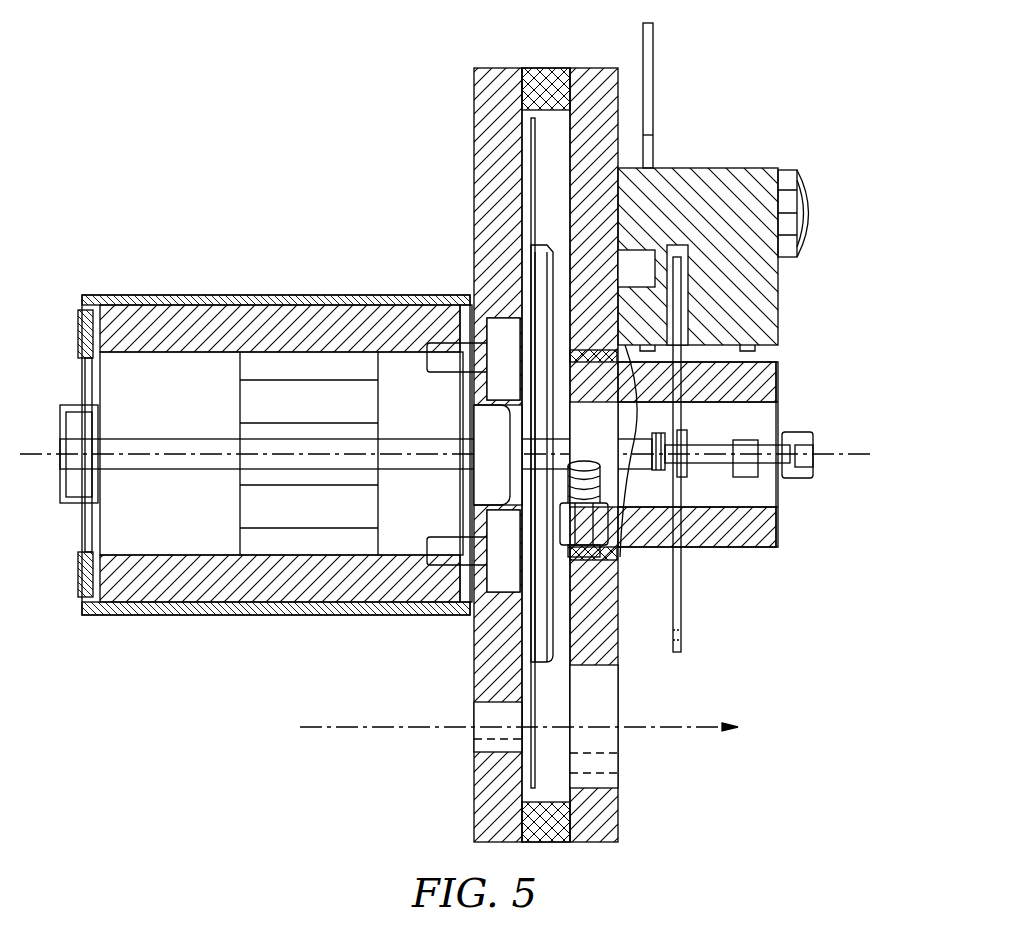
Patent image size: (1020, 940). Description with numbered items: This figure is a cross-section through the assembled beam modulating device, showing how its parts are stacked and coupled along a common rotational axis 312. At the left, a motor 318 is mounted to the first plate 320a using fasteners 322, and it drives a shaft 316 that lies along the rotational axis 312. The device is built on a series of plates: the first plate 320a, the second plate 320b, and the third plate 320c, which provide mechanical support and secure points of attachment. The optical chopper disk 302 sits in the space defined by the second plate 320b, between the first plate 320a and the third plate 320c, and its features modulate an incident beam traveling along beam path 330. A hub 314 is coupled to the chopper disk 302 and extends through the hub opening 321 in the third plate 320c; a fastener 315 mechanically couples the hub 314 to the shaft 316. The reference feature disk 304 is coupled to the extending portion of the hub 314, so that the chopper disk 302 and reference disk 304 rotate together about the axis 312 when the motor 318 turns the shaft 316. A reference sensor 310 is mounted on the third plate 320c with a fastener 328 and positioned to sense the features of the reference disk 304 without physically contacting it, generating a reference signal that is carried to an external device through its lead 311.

The optical chopper wheel or disk 302 is at (531, 192).
The reference feature disk 304 is at (681, 590).
The reference sensor 310 is at (780, 318).
The lead 311 is at (655, 70).
The rotational axis 312 is at (840, 460).
The hub 314 is at (780, 510).
The fastener 315 is at (560, 482).
The shaft 316 is at (192, 437).
The motor 318 is at (278, 295).
The first plate 320a is at (522, 60).
The second plate 320b is at (570, 55).
The third plate 320c is at (618, 60).
The hub opening 321 is at (655, 470).
The fastener 322 is at (448, 370).
The fastener 328 is at (812, 238).
The beam path 330 is at (660, 727).